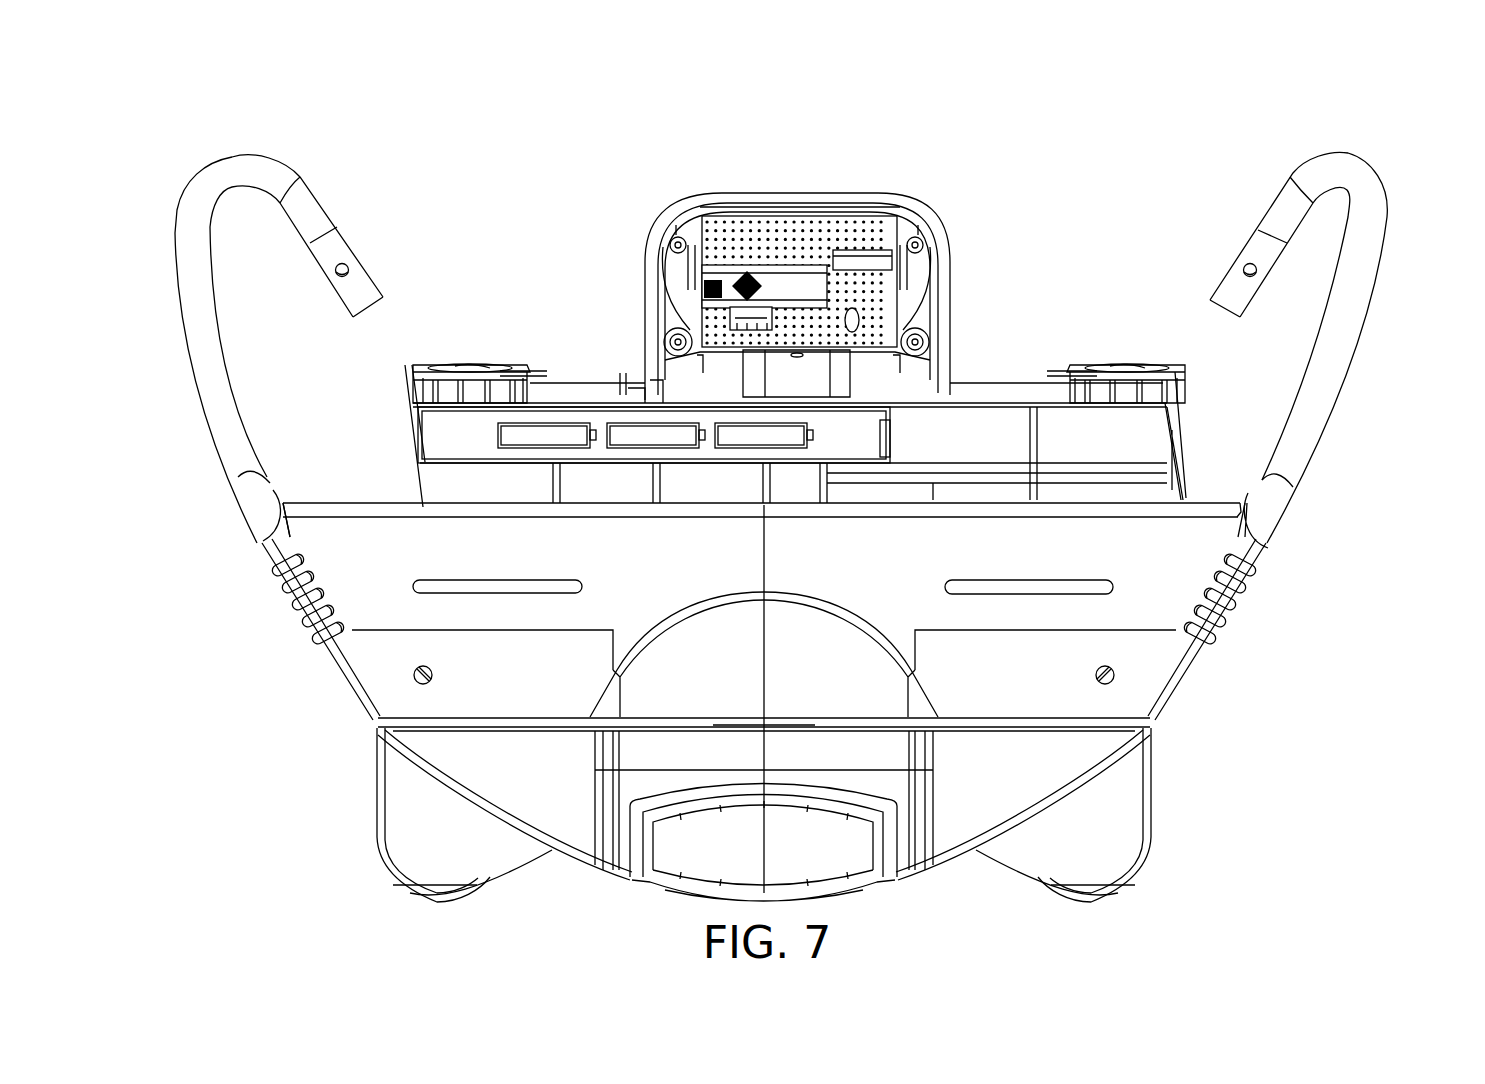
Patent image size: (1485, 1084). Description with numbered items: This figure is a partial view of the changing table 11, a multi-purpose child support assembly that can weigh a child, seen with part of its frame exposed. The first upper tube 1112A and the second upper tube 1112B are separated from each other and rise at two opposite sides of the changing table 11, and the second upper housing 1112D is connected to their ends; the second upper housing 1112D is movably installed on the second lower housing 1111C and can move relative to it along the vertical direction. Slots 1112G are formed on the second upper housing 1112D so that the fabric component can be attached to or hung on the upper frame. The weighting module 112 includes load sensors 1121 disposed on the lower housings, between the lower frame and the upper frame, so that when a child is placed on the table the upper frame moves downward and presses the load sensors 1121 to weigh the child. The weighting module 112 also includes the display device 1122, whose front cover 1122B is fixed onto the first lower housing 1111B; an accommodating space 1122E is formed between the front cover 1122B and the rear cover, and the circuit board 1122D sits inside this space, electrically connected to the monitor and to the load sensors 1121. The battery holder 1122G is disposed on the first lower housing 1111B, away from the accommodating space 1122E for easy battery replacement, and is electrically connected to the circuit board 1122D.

The changing table 11 is at (1192, 128).
The weighting module 112 is at (1053, 100).
The load sensors 1121 is at (495, 363).
The display device 1122 is at (812, 245).
The front cover 1122B is at (713, 203).
The circuit board 1122D is at (840, 230).
The accommodating space 1122E is at (677, 147).
The battery holder 1122G is at (580, 420).
The first lower housing 1111B is at (1199, 462).
The second lower housing 1111C is at (1190, 833).
The first upper tube 1112A is at (1338, 163).
The second upper tube 1112B is at (232, 163).
The second upper housing 1112D is at (1264, 649).
The slots 1112G is at (535, 604).